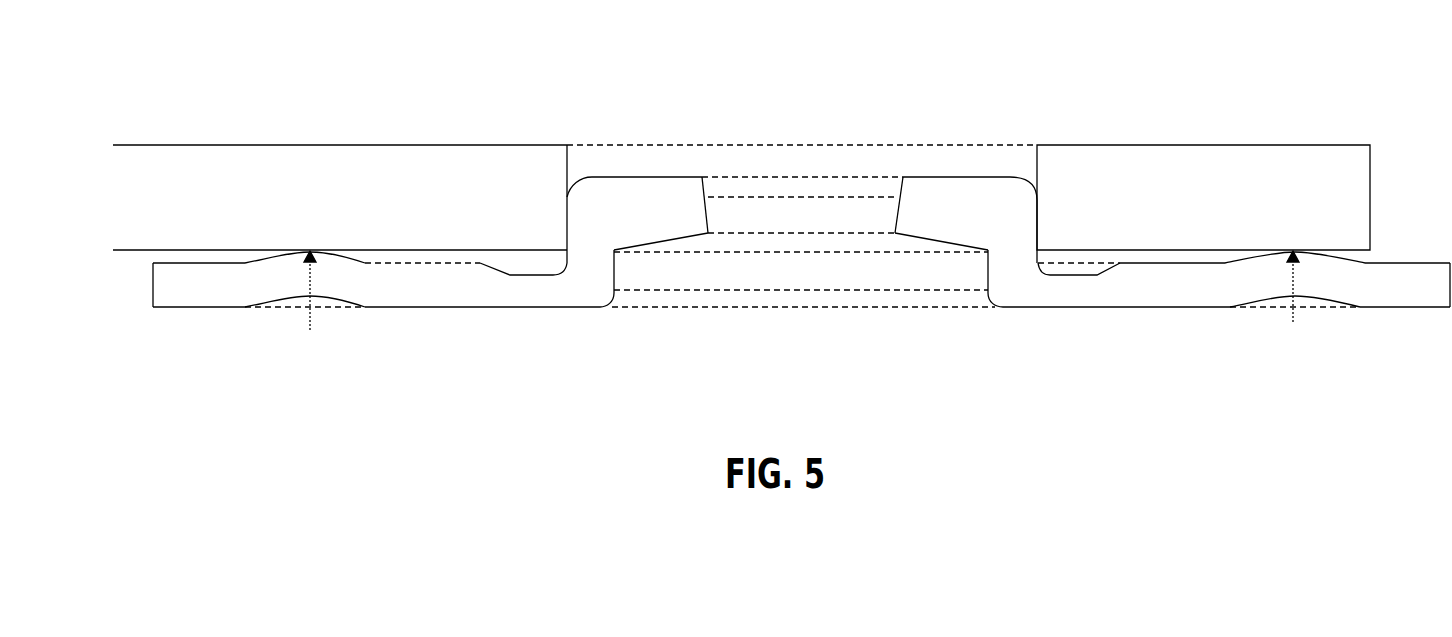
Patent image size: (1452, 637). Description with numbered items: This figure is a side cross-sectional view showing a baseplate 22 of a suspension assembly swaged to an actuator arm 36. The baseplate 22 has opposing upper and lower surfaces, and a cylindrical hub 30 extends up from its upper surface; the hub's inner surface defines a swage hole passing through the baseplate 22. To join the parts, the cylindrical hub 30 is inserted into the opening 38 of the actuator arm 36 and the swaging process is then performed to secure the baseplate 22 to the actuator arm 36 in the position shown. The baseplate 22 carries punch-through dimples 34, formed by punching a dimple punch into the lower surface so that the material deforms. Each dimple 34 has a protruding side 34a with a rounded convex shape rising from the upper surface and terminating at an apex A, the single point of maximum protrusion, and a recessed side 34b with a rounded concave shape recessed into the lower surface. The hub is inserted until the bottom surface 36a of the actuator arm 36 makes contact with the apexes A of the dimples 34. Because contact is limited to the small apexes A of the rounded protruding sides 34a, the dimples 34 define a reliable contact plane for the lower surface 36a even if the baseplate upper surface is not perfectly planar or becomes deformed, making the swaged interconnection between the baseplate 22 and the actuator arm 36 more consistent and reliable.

The baseplate 22 is at (1395, 263).
The cylindrical hub 30 is at (953, 178).
The dimple 34 is at (800, 268).
The protruding side 34a is at (282, 250).
The recessed side 34b is at (333, 300).
The actuator arm 36 is at (148, 145).
The bottom surface of the actuator arm 36a is at (133, 253).
The opening 38 is at (567, 167).
The apex A is at (802, 307).